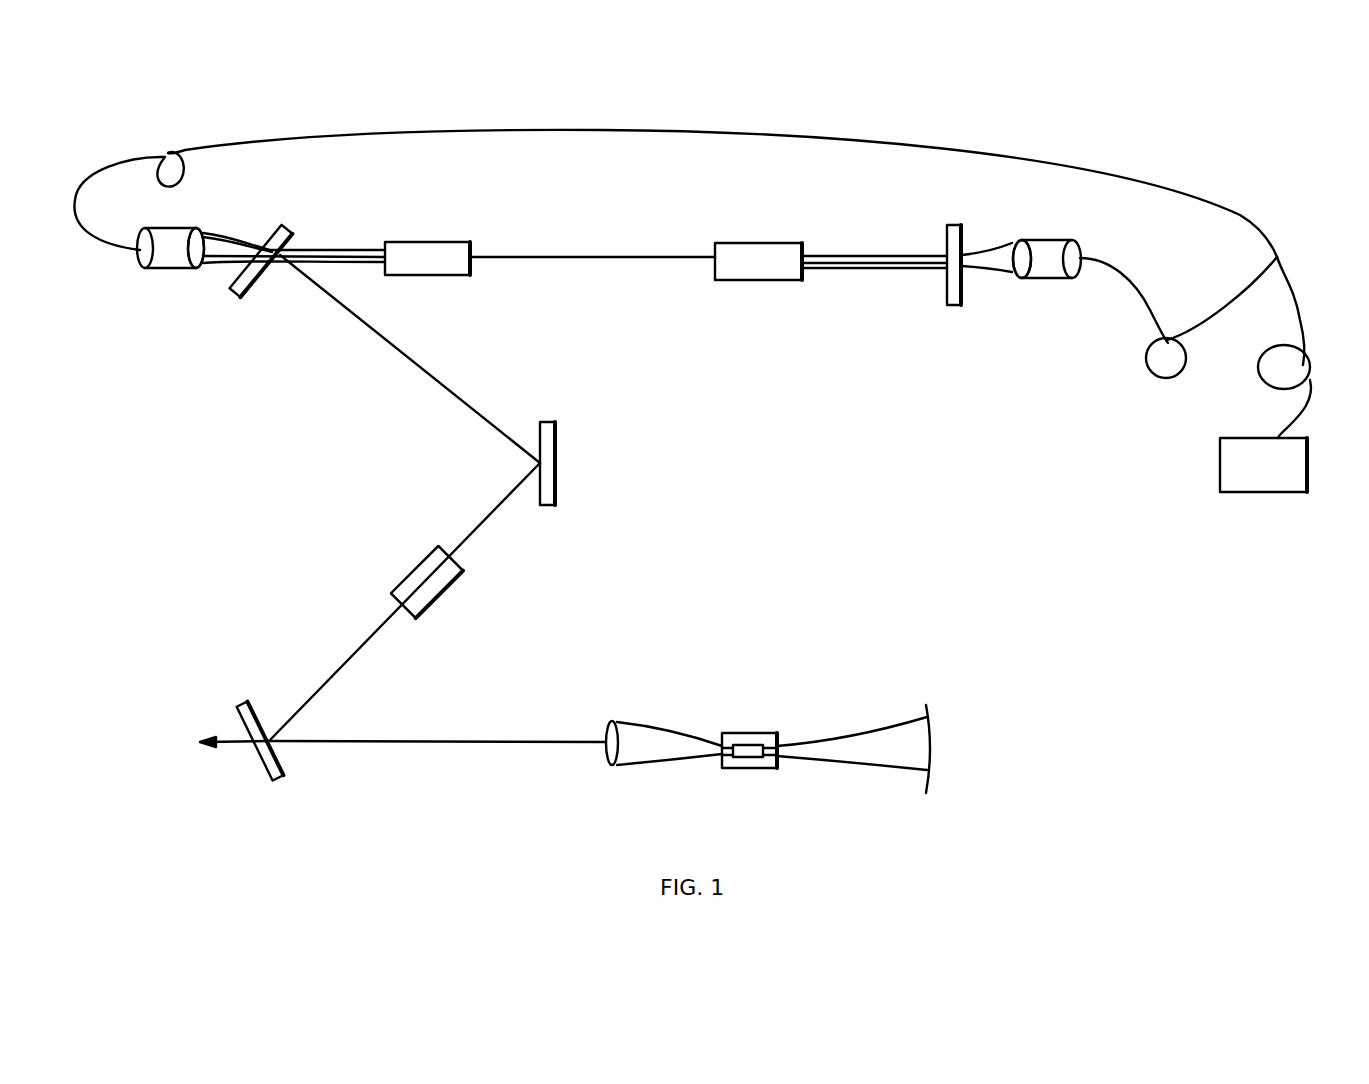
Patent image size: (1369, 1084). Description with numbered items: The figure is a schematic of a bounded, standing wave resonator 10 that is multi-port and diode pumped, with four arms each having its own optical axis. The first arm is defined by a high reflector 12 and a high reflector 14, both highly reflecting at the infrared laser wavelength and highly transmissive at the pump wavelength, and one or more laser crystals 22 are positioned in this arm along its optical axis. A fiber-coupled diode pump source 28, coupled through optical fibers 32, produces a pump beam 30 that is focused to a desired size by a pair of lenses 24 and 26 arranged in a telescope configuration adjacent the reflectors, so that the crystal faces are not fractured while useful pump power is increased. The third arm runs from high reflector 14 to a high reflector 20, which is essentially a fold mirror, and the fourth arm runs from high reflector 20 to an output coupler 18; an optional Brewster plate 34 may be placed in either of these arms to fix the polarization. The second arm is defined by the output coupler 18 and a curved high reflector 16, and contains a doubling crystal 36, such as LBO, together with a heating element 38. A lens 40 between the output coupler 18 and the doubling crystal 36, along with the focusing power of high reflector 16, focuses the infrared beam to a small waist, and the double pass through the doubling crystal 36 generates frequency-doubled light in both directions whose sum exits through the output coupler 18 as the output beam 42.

The standing wave resonator 10 is at (832, 495).
The high reflector 12 is at (953, 225).
The high reflector 14 is at (237, 293).
The high reflector 16 is at (930, 778).
The output coupler 18 is at (262, 760).
The high reflector 20 is at (555, 468).
The laser crystal 22 is at (425, 248).
The lens 24 is at (145, 262).
The lens 26 is at (198, 265).
The fiber-coupled diode pump source 28 is at (1245, 480).
The pump beam 30 is at (217, 243).
The optical fiber 32 is at (1296, 300).
The Brewster plate 34 is at (438, 580).
The doubling crystal 36 is at (745, 748).
The heating element 38 is at (775, 740).
The lens 40 is at (606, 750).
The output beam 42 is at (218, 742).